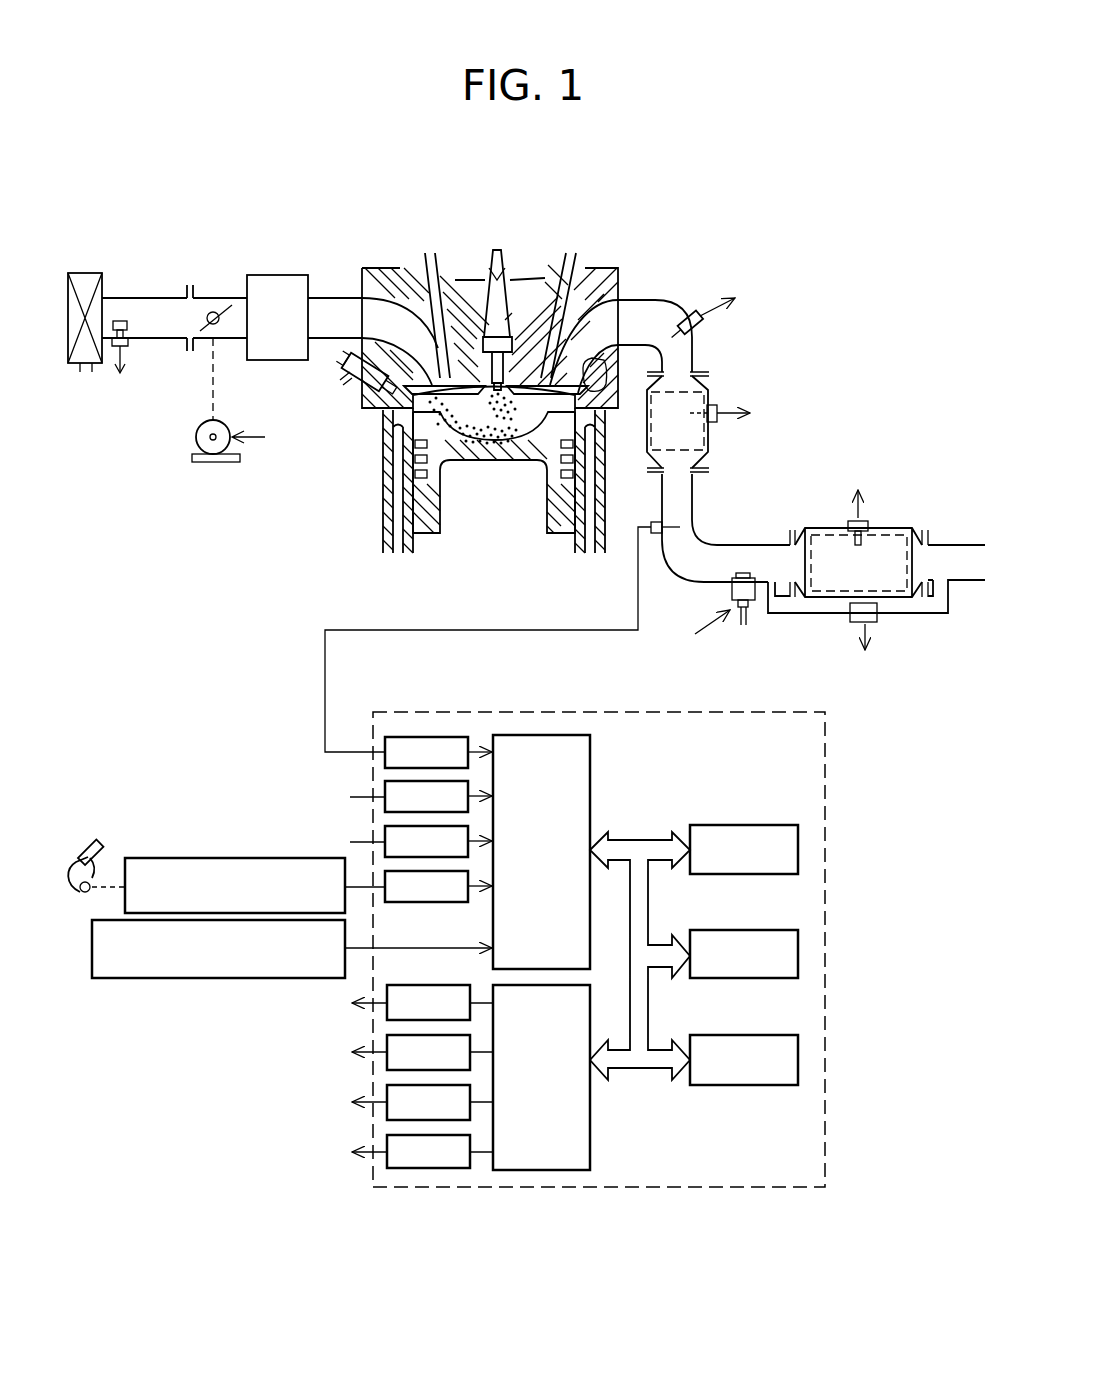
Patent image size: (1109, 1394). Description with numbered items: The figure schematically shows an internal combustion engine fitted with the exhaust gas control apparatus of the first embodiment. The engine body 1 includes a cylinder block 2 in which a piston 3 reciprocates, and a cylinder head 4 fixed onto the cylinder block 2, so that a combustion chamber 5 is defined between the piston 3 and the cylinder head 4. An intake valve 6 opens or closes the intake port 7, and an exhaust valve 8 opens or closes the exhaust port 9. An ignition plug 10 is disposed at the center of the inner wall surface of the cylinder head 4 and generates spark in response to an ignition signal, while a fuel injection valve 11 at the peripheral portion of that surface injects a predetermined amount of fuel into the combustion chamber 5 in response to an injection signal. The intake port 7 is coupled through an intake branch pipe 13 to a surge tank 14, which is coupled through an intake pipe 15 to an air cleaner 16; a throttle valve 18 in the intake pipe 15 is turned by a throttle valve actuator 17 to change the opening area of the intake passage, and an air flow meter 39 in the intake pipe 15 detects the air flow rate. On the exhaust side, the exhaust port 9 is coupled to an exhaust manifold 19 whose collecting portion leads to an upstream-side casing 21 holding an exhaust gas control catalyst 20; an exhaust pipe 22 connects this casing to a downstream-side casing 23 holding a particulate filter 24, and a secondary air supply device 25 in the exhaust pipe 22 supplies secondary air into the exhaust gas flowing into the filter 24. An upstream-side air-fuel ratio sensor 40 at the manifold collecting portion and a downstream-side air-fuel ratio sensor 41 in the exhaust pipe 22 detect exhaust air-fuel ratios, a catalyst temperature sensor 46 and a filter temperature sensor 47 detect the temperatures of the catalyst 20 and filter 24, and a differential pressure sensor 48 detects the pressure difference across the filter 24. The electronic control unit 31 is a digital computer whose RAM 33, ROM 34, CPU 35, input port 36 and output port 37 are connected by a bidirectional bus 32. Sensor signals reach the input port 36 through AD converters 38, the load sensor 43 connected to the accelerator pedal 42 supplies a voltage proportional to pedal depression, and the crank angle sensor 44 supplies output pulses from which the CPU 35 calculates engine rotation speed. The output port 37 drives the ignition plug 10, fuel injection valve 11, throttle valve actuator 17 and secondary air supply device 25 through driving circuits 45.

The engine body 1 is at (458, 480).
The cylinder block 2 is at (598, 487).
The piston 3 is at (437, 486).
The cylinder head 4 is at (598, 292).
The combustion chamber 5 is at (545, 402).
The intake valve 6 is at (443, 300).
The intake port 7 is at (396, 306).
The exhaust valve 8 is at (561, 293).
The exhaust port 9 is at (632, 307).
The ignition plug 10 is at (501, 332).
The fuel injection valve 11 is at (339, 387).
The intake branch pipe 13 is at (334, 306).
The surge tank 14 is at (276, 345).
The intake pipe 15 is at (152, 338).
The air cleaner 16 is at (84, 273).
The throttle valve actuator 17 is at (197, 437).
The throttle valve 18 is at (230, 307).
The exhaust manifold 19 is at (665, 300).
The exhaust gas control catalyst 20 is at (713, 392).
The upstream-side casing 21 is at (710, 446).
The exhaust pipe 22 is at (694, 513).
The downstream-side casing 23 is at (830, 528).
The particulate filter 24 is at (886, 528).
The secondary air supply device 25 is at (756, 592).
The electronic control unit 31 is at (577, 946).
The bidirectional bus 32 is at (640, 840).
The random access memory 33 is at (775, 825).
The read only memory 34 is at (775, 930).
The microprocessor 35 is at (760, 1035).
The input port 36 is at (591, 739).
The output port 37 is at (591, 1140).
The AD converter 38 is at (385, 878).
The air flow meter 39 is at (120, 321).
The upstream-side air-fuel ratio sensor 40 is at (705, 328).
The downstream-side air-fuel ratio sensor 41 is at (652, 521).
The accelerator pedal 42 is at (86, 850).
The load sensor 43 is at (200, 858).
The crank angle sensor 44 is at (212, 980).
The driving circuit 45 is at (387, 1142).
The catalyst temperature sensor 46 is at (720, 413).
The filter temperature sensor 47 is at (866, 520).
The differential pressure sensor 48 is at (869, 628).